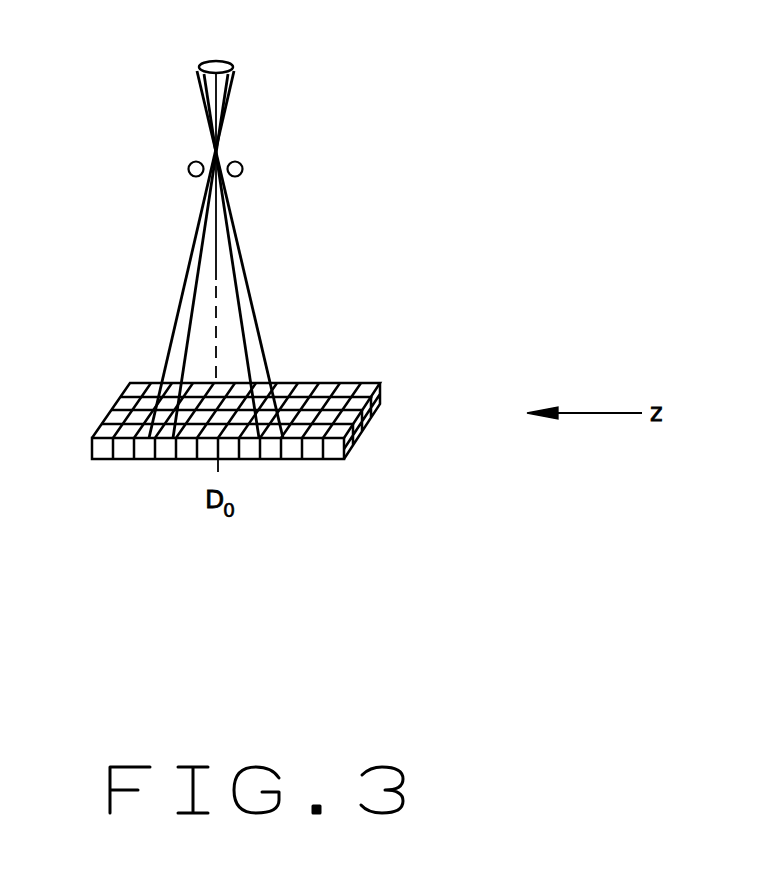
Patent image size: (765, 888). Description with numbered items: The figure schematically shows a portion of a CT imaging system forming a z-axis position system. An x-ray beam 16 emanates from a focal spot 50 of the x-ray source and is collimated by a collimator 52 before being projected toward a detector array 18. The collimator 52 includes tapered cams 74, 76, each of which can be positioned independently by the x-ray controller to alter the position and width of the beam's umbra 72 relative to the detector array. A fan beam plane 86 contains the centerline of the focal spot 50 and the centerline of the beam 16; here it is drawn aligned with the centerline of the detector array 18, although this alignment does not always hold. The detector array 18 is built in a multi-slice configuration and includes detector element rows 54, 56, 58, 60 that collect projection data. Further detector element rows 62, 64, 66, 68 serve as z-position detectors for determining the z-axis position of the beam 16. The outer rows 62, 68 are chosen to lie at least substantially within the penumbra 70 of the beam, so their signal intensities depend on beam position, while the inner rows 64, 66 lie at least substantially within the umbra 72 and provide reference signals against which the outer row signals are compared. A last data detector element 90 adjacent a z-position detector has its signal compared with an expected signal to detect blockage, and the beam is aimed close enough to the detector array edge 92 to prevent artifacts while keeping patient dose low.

The detector array 18 is at (185, 555).
The focal spot 50 is at (216, 61).
The x-ray beam 16 is at (216, 123).
The fan beam plane 86 is at (207, 240).
The penumbra 70 is at (178, 347).
The umbra 72 is at (242, 302).
The tapered cam 74 is at (188, 169).
The tapered cam 76 is at (243, 170).
The collimator 52 is at (237, 161).
The detector element row 54 is at (216, 378).
The detector element row 56 is at (245, 380).
The detector element row 58 is at (290, 382).
The detector element row 60 is at (330, 382).
The detector array edge 92 is at (378, 403).
The last data detector element 90 is at (328, 420).
The outer detector element row 62 is at (163, 448).
The inner detector element row 64 is at (187, 448).
The inner detector element row 66 is at (250, 448).
The outer detector element row 68 is at (270, 448).